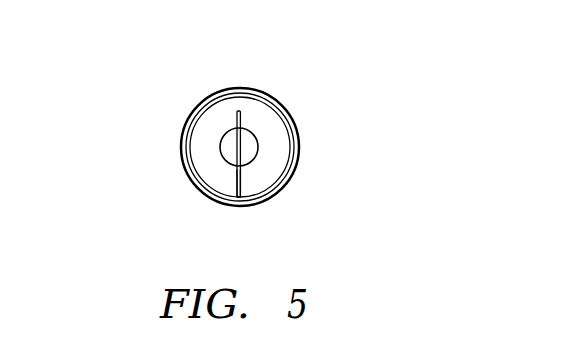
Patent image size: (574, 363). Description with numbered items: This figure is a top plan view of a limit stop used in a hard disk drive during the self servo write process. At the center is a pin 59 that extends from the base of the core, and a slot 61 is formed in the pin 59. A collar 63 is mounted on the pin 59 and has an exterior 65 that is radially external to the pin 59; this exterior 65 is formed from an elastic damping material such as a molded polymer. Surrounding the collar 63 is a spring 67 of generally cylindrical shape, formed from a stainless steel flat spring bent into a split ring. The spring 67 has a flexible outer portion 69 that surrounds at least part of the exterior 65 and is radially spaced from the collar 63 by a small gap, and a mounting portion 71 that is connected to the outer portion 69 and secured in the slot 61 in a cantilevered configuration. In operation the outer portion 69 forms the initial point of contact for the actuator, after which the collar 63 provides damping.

The pin 59 is at (256, 131).
The slot 61 is at (236, 146).
The collar 63 is at (278, 153).
The exterior 65 is at (279, 194).
The spring 67 is at (243, 165).
The flexible outer portion 69 is at (298, 132).
The mounting portion 71 is at (235, 175).